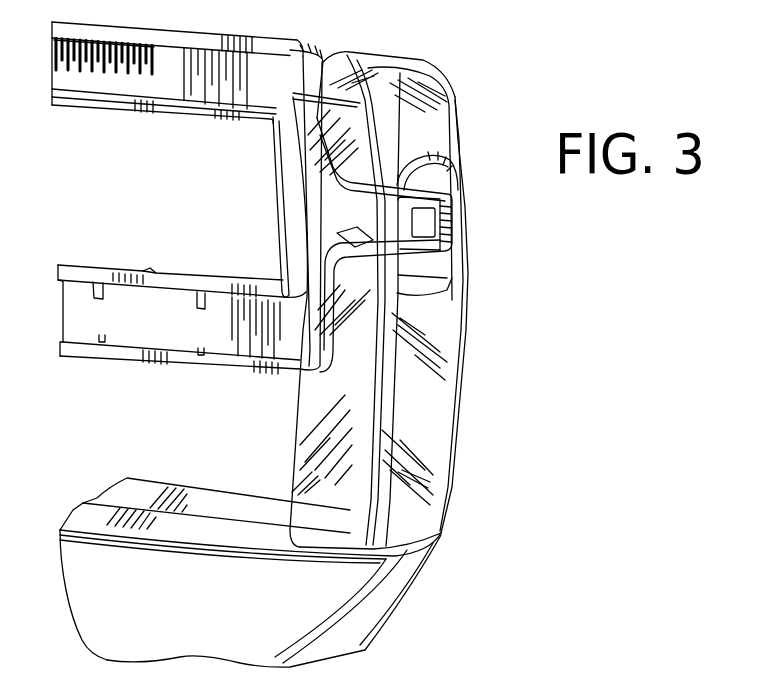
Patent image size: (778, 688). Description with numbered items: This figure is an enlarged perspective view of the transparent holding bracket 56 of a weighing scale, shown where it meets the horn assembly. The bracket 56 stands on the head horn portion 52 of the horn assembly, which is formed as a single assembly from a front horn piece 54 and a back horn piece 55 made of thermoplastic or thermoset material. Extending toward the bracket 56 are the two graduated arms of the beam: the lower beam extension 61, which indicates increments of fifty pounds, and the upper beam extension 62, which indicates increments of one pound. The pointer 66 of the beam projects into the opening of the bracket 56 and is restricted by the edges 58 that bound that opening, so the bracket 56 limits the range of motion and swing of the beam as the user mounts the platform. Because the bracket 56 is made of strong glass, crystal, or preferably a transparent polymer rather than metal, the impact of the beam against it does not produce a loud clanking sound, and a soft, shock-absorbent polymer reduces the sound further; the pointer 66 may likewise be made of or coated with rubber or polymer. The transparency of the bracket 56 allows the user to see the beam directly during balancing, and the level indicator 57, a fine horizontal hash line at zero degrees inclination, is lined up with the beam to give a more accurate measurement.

The head horn portion 52 is at (98, 552).
The front horn piece 54 is at (215, 532).
The back horn piece 55 is at (262, 510).
The transparent holding bracket 56 is at (438, 410).
The level indicator 57 is at (337, 236).
The edges 58 is at (440, 160).
The lower beam extension 61 is at (219, 362).
The upper beam extension 62 is at (183, 110).
The pointer 66 is at (452, 222).